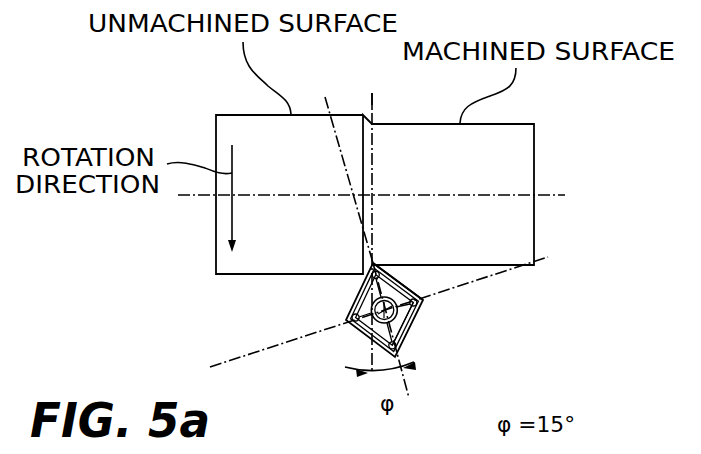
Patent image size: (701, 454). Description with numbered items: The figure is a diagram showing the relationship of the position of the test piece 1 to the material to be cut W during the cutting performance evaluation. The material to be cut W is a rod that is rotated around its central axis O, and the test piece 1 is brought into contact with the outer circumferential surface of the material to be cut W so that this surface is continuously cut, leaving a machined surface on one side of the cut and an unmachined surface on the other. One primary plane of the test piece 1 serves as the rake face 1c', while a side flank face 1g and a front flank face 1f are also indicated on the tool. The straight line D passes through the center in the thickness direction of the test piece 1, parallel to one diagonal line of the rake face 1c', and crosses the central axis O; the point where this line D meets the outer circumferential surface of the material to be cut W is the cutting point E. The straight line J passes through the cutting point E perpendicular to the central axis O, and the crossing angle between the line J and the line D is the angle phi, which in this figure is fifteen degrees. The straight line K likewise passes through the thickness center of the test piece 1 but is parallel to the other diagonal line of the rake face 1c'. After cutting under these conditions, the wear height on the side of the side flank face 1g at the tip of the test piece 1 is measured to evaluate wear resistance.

The test piece 1 is at (386, 333).
The side flank face 1g is at (363, 298).
The front flank face 1f is at (405, 284).
The rake face 1c' is at (451, 335).
The material to be cut W is at (242, 115).
The straight line passing E perpendicular to O J is at (372, 106).
The central axis of material to be cut O is at (386, 195).
The cutting point E is at (372, 263).
The straight line parallel to the other diagonal of the rake face K is at (248, 353).
The straight line parallel to one diagonal of the rake face D is at (405, 392).